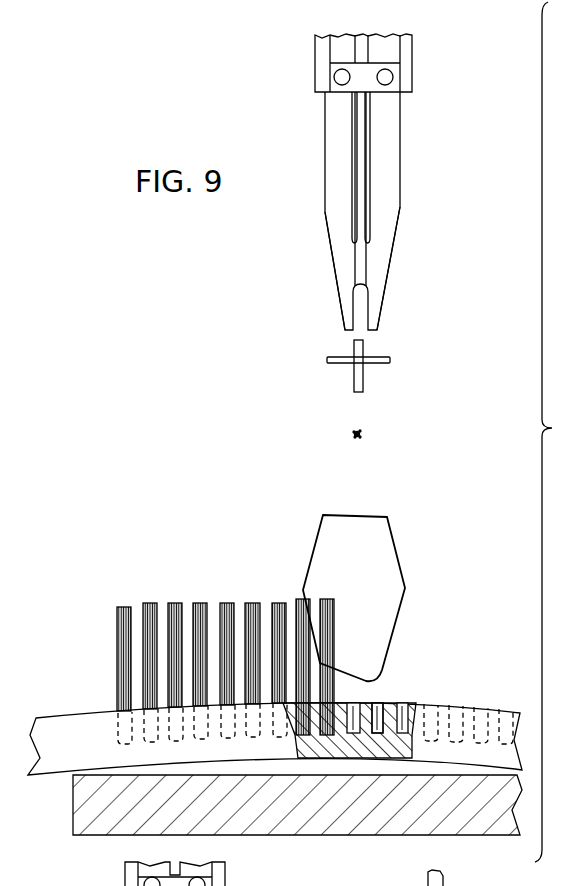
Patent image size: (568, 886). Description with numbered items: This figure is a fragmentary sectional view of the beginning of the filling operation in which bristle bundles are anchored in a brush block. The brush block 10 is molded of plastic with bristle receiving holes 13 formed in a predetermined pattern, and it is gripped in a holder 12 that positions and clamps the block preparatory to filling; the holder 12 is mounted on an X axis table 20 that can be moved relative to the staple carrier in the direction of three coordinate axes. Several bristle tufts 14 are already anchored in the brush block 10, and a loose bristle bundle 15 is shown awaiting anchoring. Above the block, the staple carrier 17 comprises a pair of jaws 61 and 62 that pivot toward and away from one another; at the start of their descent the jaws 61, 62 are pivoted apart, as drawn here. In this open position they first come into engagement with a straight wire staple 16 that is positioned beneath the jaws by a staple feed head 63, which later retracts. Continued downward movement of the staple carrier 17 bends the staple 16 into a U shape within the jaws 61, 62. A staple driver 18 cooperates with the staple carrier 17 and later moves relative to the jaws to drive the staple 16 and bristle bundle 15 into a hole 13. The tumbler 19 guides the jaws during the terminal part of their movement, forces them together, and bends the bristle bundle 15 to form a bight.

The brush block 10 is at (60, 722).
The holder 12 is at (175, 862).
The bristle receiving hole 13 is at (385, 706).
The bristle tuft 14 is at (117, 645).
The bristle bundle 15 is at (361, 434).
The staple 16 is at (337, 362).
The staple carrier 17 is at (400, 182).
The staple driver 18 is at (362, 125).
The tumbler 19 is at (395, 550).
The X axis table 20 is at (106, 823).
The jaw 61 is at (331, 247).
The jaw 62 is at (391, 255).
The staple feed head 63 is at (363, 380).